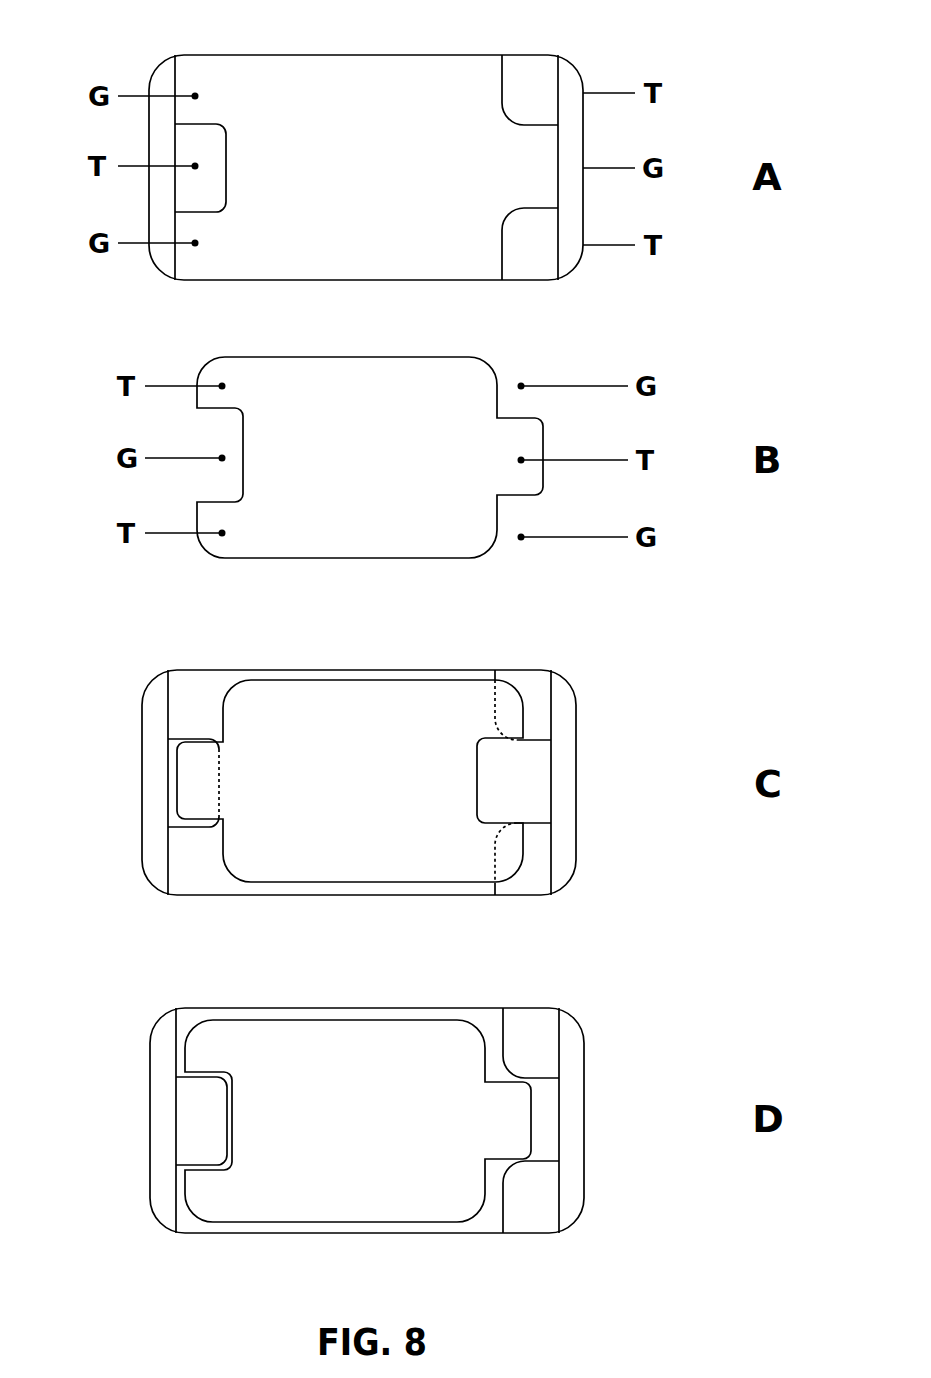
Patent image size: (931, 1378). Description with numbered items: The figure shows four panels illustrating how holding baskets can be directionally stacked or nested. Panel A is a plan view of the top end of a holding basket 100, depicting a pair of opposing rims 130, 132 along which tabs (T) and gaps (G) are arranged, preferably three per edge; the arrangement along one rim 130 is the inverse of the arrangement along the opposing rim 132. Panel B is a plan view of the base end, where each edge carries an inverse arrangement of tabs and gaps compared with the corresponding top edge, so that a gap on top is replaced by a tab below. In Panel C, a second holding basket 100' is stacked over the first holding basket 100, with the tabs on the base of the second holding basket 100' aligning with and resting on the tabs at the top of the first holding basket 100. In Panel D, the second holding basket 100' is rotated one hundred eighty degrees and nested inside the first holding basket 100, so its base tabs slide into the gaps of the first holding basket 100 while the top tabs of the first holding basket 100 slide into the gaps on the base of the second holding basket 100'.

The holding basket 100 is at (363, 616).
The second holding basket 100' is at (354, 922).
The rim 130 is at (163, 72).
The rim 132 is at (567, 72).